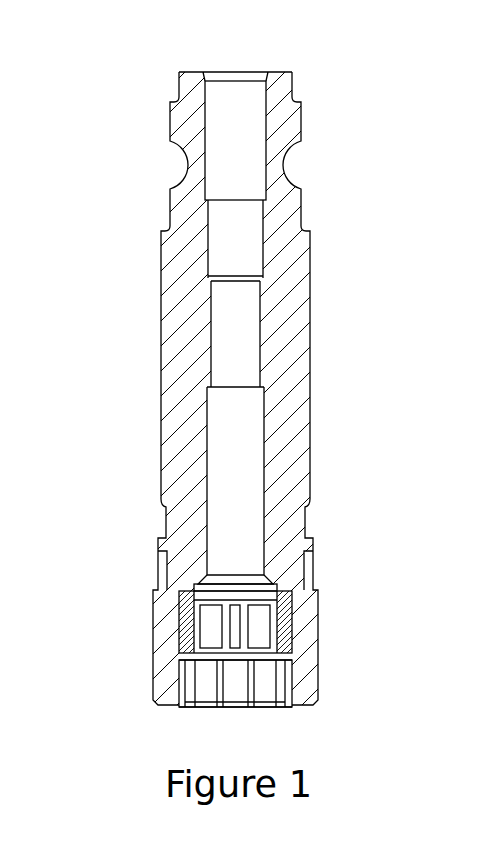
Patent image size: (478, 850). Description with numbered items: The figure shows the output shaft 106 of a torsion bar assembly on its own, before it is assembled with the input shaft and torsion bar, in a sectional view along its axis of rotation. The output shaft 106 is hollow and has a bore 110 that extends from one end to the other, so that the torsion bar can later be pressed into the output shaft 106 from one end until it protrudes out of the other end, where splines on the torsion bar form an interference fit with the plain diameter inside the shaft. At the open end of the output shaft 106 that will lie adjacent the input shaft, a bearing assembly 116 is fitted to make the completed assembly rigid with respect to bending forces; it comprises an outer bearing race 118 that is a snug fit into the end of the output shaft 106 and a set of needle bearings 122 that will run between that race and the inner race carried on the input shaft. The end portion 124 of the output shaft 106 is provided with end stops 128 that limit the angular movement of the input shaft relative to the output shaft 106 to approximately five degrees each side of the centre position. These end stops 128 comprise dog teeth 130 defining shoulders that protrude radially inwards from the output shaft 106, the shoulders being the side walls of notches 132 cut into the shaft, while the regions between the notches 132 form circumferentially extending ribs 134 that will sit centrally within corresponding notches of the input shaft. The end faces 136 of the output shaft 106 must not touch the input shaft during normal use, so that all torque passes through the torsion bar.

The output shaft 106 is at (125, 98).
The bore 110 is at (232, 253).
The bearing assembly 116 is at (178, 627).
The outer bearing race 118 is at (316, 619).
The needle bearings 122 is at (237, 628).
The end portion 124 is at (148, 642).
The end stops 128 is at (298, 700).
The dog teeth 130 is at (295, 675).
The notches 132 is at (195, 680).
The ribs 134 is at (232, 690).
The end faces 136 is at (233, 706).